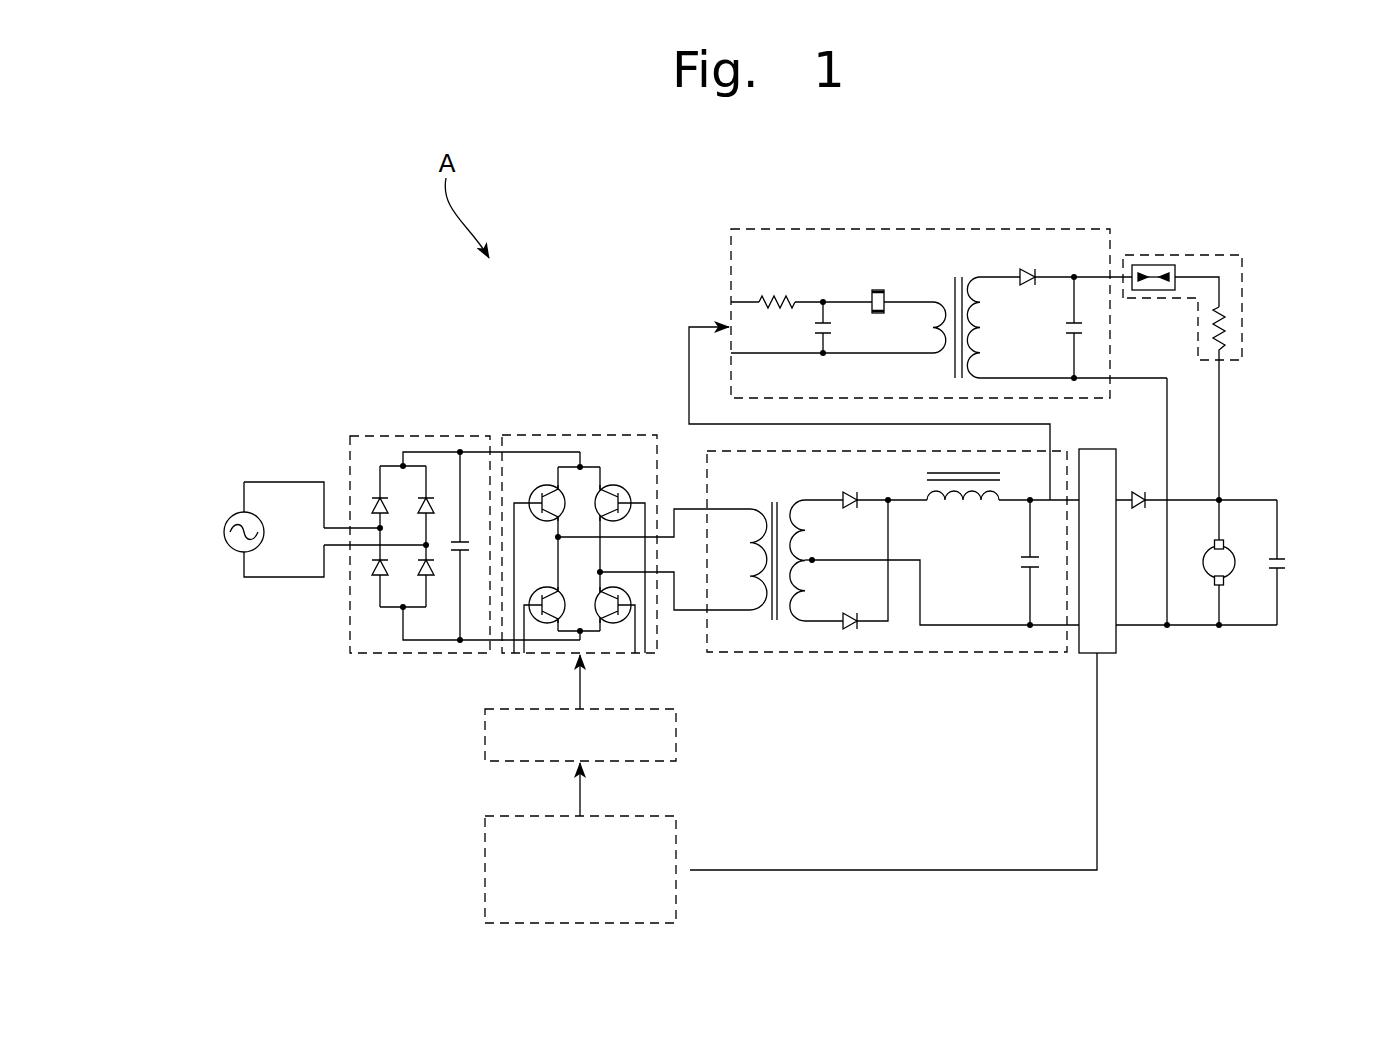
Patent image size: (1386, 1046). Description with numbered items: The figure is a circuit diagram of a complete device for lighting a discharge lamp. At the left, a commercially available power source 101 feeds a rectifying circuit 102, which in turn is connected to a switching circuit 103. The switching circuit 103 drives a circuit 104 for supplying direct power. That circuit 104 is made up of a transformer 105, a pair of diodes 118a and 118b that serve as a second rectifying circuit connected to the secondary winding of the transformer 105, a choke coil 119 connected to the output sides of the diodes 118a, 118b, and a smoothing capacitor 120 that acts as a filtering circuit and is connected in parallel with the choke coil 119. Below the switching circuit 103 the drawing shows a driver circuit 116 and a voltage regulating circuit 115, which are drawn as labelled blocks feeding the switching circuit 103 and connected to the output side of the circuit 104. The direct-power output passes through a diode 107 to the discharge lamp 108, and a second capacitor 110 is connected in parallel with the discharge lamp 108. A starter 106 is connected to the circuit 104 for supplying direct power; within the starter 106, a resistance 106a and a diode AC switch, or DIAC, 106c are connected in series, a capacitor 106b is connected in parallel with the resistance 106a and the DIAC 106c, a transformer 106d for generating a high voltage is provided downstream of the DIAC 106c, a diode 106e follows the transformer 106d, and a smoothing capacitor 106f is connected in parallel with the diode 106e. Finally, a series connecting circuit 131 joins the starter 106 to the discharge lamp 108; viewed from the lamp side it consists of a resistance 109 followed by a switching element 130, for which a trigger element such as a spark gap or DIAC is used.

The commercially available power source 101 is at (224, 532).
The rectifying circuit 102 is at (380, 422).
The switching circuit 103 is at (530, 422).
The circuit for supplying direct power 104 is at (905, 645).
The transformer 105 is at (777, 656).
The starter 106 is at (940, 281).
The resistance 106a is at (771, 297).
The capacitor 106b is at (823, 298).
The diode AC switch (DIAC) 106c is at (878, 290).
The transformer for generating a high voltage 106d is at (960, 266).
The diode 106e is at (1028, 267).
The smoothing capacitor 106f is at (1080, 318).
The diode 107 is at (1139, 512).
The discharge lamp 108 is at (1223, 587).
The resistance 109 is at (1225, 325).
The second capacitor 110 is at (1283, 572).
The voltage regulating circuit 115 is at (485, 870).
The driver circuit 116 is at (485, 740).
The diode 118a is at (845, 492).
The diode 118b is at (850, 630).
The choke coil 119 is at (968, 516).
The smoothing capacitor 120 is at (1043, 582).
The switching element 130 is at (1163, 265).
The series connecting circuit 131 is at (1242, 277).